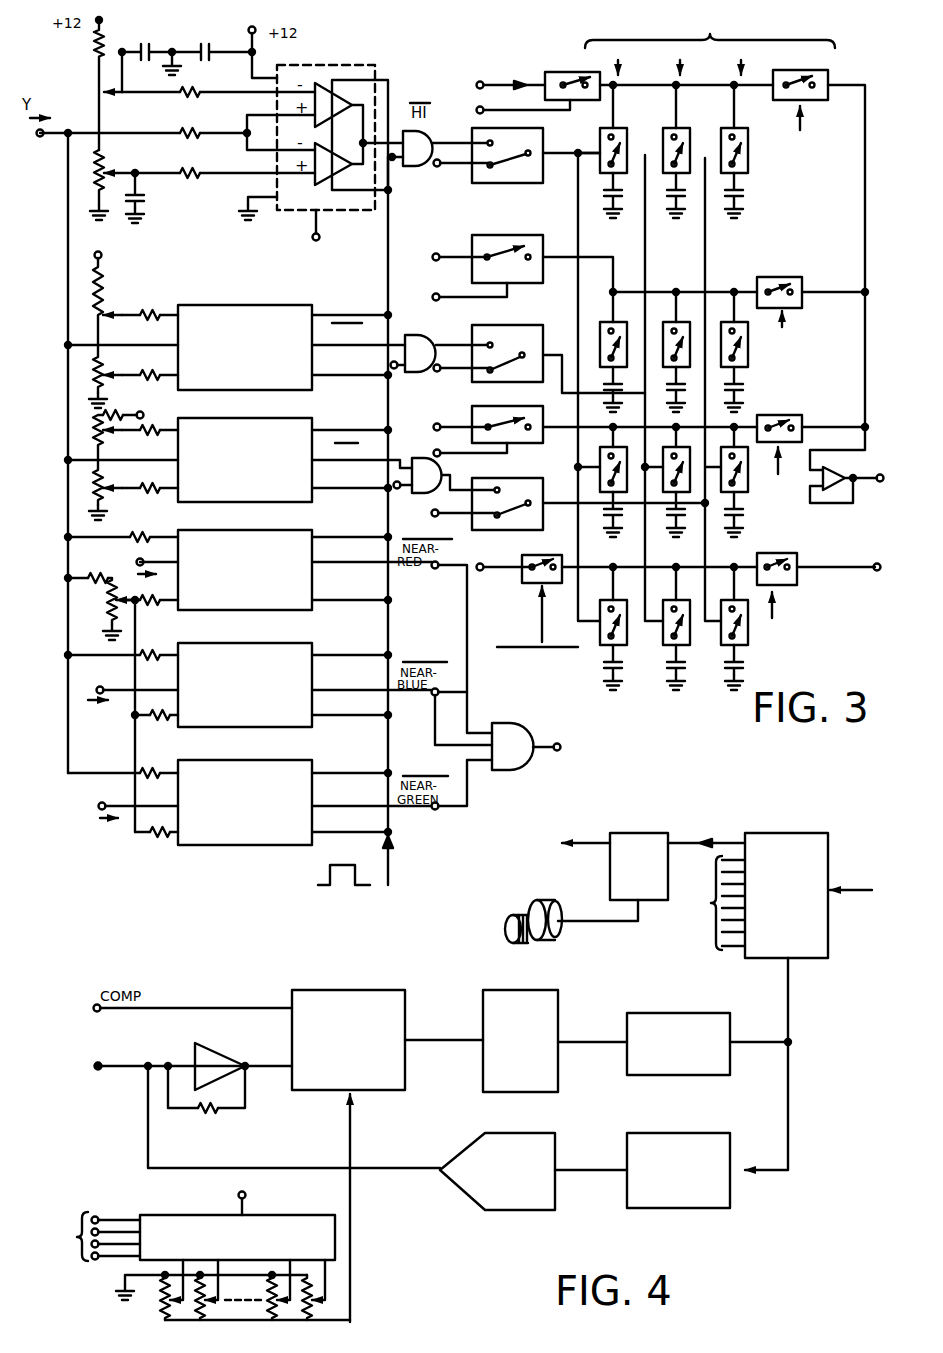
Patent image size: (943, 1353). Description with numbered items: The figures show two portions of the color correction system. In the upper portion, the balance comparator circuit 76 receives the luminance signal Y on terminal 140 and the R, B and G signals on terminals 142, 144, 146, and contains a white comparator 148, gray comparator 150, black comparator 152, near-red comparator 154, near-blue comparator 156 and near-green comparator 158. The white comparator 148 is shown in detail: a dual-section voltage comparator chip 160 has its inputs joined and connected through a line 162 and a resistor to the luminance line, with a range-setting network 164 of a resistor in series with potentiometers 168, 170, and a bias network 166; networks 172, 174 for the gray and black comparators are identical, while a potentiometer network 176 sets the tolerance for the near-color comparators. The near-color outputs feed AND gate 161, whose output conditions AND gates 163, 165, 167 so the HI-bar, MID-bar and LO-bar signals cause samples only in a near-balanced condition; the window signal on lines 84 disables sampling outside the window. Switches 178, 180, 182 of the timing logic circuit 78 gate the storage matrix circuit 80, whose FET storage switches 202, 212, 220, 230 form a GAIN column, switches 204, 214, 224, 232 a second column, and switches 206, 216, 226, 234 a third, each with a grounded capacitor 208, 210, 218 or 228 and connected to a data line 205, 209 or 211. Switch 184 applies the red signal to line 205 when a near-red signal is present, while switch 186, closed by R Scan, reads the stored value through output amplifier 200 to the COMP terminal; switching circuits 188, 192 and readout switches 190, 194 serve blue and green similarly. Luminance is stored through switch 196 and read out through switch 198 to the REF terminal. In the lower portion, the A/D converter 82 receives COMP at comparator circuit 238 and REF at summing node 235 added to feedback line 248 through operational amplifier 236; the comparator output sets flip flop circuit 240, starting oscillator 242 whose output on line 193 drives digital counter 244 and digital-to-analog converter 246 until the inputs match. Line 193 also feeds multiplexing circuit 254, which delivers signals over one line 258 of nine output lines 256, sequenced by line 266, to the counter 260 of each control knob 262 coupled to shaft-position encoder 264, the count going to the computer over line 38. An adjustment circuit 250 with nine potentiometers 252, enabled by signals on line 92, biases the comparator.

In FIG. 4, the counter output line 38 is at (595, 871).
In FIG. 3, the balance comparator circuit 76 is at (208, 853).
In FIG. 3, the timing logic circuit 78 is at (510, 50).
In FIG. 3, the storage matrix circuit 80 is at (710, 51).
In FIG. 4, the A/D converter 82 is at (748, 1212).
In FIG. 3, the window signal lines 84 is at (390, 623).
In FIG. 4, the scan address signal lines 92 is at (94, 1236).
In FIG. 3, the luminance input terminal 140 is at (43, 141).
In FIG. 3, the red input terminal 142 is at (135, 559).
In FIG. 3, the blue input terminal 144 is at (119, 682).
In FIG. 3, the green input terminal 146 is at (104, 813).
In FIG. 3, the white comparator 148 is at (430, 69).
In FIG. 3, the gray comparator 150 is at (258, 383).
In FIG. 3, the black comparator 152 is at (258, 491).
In FIG. 3, the near-red comparator 154 is at (258, 601).
In FIG. 3, the near-blue comparator 156 is at (258, 716).
In FIG. 3, the near-green comparator 158 is at (258, 834).
In FIG. 3, the dual-section voltage comparator integrated circuit chip 160 is at (352, 212).
In FIG. 3, the AND gate 161 is at (503, 772).
In FIG. 3, the line 162 is at (213, 131).
In FIG. 3, the AND gate 163 is at (412, 168).
In FIG. 3, the range-setting network 164 is at (150, 30).
In FIG. 3, the AND gate 165 is at (412, 373).
In FIG. 3, the bias network 166 is at (215, 30).
In FIG. 3, the AND gate 167 is at (418, 495).
In FIG. 3, the potentiometer 168 is at (111, 95).
In FIG. 3, the potentiometer 170 is at (108, 172).
In FIG. 3, the range-setting network 172 is at (120, 286).
In FIG. 3, the range-setting network 174 is at (108, 429).
In FIG. 3, the potentiometer network 176 is at (107, 598).
In FIG. 3, the FET switch 178 is at (532, 149).
In FIG. 3, the FET switch 180 is at (532, 346).
In FIG. 3, the FET switch 182 is at (540, 500).
In FIG. 3, the FET switch 184 is at (558, 70).
In FIG. 3, the FET switch 186 is at (818, 68).
In FIG. 3, the switching circuit 188 is at (488, 234).
In FIG. 3, the FET switch 190 is at (780, 277).
In FIG. 3, the switching circuit 192 is at (485, 406).
In FIG. 4, the oscillator output line 193 is at (790, 1003).
In FIG. 3, the FET switch 194 is at (800, 416).
In FIG. 3, the FET switch 196 is at (558, 557).
In FIG. 3, the output FET switch 198 is at (800, 560).
In FIG. 3, the output amplifier 200 is at (843, 463).
In FIG. 3, the FET storage switch 202 is at (615, 128).
In FIG. 3, the FET storage switch 204 is at (678, 128).
In FIG. 3, the data line 205 is at (709, 85).
In FIG. 3, the FET storage switch 206 is at (736, 128).
In FIG. 3, the capacitor 208 is at (760, 190).
In FIG. 3, the data line 209 is at (614, 426).
In FIG. 3, the capacitor 210 is at (756, 372).
In FIG. 3, the data line 211 is at (614, 567).
In FIG. 3, the FET storage switch 212 is at (615, 322).
In FIG. 3, the FET storage switch 214 is at (677, 322).
In FIG. 3, the FET storage switch 216 is at (734, 322).
In FIG. 3, the capacitor 218 is at (753, 541).
In FIG. 3, the FET storage switch 220 is at (600, 447).
In FIG. 3, the FET storage switch 224 is at (679, 445).
In FIG. 3, the FET storage switch 226 is at (749, 490).
In FIG. 3, the capacitor 228 is at (754, 668).
In FIG. 3, the FET storage switch 230 is at (602, 646).
In FIG. 3, the FET storage switch 232 is at (662, 647).
In FIG. 3, the FET storage switch 234 is at (723, 648).
In FIG. 4, the summing node 235 is at (146, 1070).
In FIG. 4, the operational amplifier 236 is at (224, 1056).
In FIG. 4, the comparator circuit 238 is at (366, 1067).
In FIG. 4, the flip flop circuit 240 is at (537, 1063).
In FIG. 4, the oscillator 242 is at (694, 1067).
In FIG. 4, the digital counter 244 is at (694, 1195).
In FIG. 4, the digital-to-analog converter 246 is at (517, 1193).
In FIG. 4, the feedback line 248 is at (150, 1135).
In FIG. 4, the adjustment circuit 250 is at (294, 1248).
In FIG. 4, the potentiometers 252 is at (155, 1303).
In FIG. 4, the multiplexing circuit 254 is at (803, 918).
In FIG. 4, the output lines 256 is at (709, 903).
In FIG. 4, the output line 258 is at (720, 842).
In FIG. 4, the counter 260 is at (656, 892).
In FIG. 4, the control knob 262 is at (505, 929).
In FIG. 4, the shaft-position encoder 264 is at (564, 932).
In FIG. 4, the sequencing signal line 266 is at (852, 888).